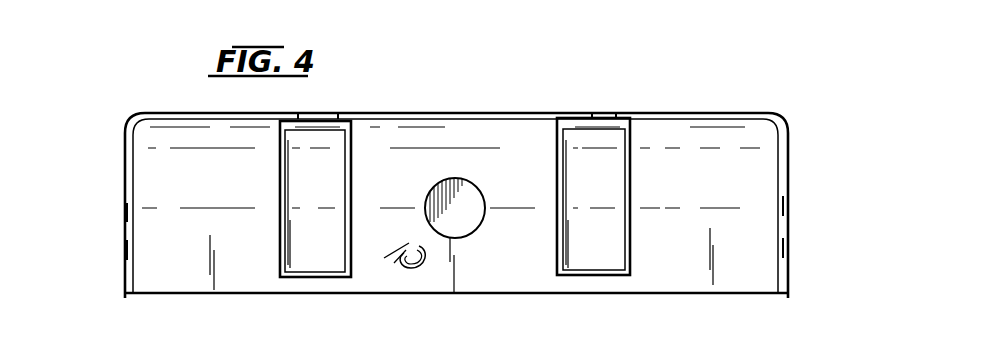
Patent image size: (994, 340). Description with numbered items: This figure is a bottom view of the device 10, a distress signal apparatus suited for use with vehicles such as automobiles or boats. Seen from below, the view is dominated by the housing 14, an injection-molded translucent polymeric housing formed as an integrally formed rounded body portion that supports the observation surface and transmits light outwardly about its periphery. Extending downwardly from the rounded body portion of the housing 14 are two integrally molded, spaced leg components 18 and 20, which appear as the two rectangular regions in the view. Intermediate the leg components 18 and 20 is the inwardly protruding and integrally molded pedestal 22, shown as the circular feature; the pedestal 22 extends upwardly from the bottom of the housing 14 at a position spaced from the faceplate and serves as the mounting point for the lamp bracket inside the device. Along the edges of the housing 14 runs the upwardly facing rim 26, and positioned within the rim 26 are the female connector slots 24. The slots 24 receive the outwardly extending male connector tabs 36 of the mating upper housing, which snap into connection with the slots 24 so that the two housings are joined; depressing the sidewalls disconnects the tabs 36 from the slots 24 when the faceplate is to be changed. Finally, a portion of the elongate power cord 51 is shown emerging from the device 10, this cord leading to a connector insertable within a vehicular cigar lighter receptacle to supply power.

The device 10 is at (702, 66).
The housing 14 is at (781, 166).
The leg component 18 is at (632, 130).
The leg component 20 is at (362, 128).
The pedestal 22 is at (478, 230).
The female connector slots 24 is at (338, 118).
The rim 26 is at (790, 122).
The male connector tabs 36 is at (311, 115).
The cord 51 is at (408, 266).